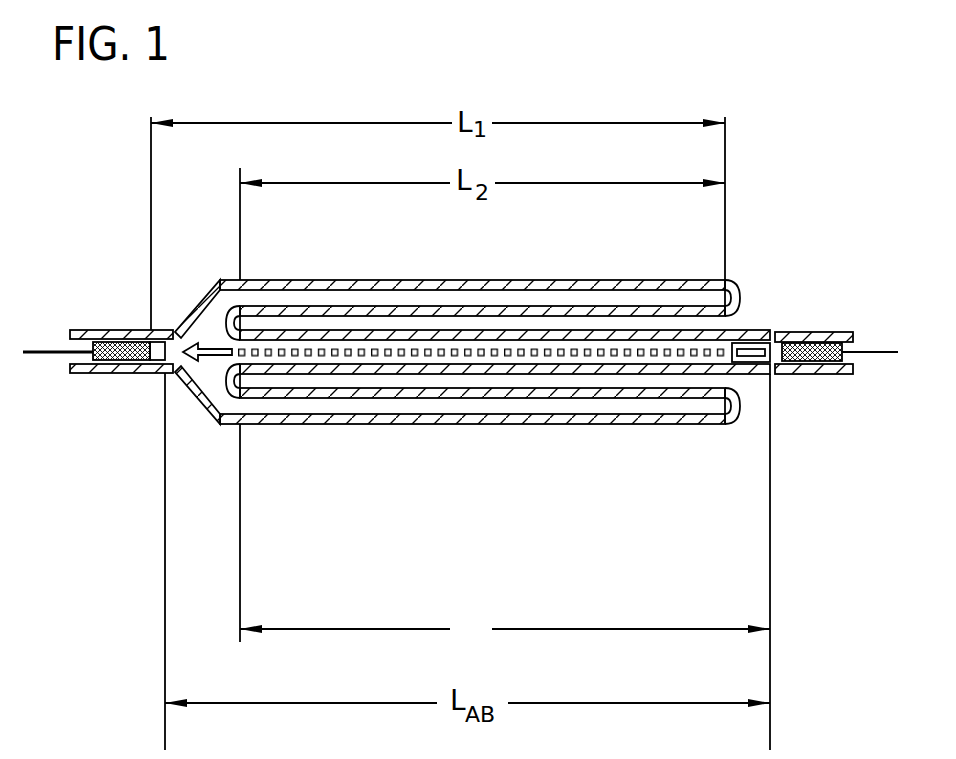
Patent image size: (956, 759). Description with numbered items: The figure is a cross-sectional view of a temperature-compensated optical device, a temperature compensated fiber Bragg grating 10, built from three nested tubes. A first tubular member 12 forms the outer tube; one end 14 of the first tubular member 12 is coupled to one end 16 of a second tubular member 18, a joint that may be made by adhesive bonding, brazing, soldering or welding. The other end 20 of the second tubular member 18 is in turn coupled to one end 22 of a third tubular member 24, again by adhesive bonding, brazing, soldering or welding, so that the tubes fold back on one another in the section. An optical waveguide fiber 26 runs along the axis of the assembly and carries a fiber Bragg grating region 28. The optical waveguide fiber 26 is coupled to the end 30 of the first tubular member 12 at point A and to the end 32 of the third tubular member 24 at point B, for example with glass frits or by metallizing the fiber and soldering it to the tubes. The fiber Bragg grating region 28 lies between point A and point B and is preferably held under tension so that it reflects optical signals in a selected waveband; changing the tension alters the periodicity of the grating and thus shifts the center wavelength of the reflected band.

The temperature compensated fiber Bragg grating 10 is at (505, 447).
The first tubular member 12 is at (230, 425).
The one end of the first tubular member 14 is at (712, 426).
The one end of the second tubular member 16 is at (727, 387).
The second tubular member 18 is at (597, 424).
The other end of the second tubular member 20 is at (257, 399).
The one end of the third tubular member 22 is at (237, 358).
The third tubular member 24 is at (762, 374).
The optical waveguide fiber 26 is at (58, 348).
The fiber Bragg grating region 28 is at (483, 355).
The end of the first tubular member 30 is at (110, 360).
The end of the third tubular member 32 is at (840, 330).
The point A is at (183, 375).
The point B is at (790, 383).